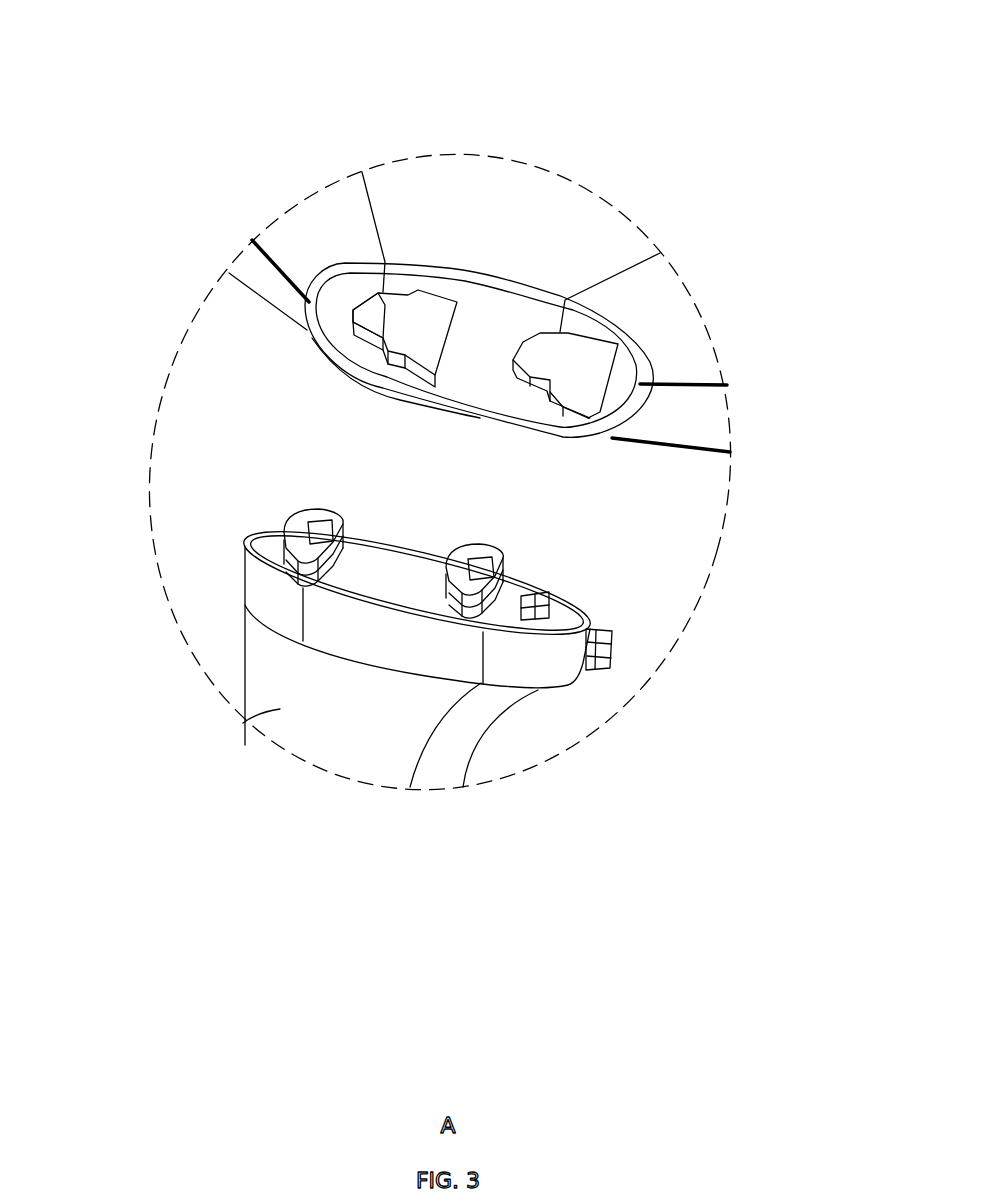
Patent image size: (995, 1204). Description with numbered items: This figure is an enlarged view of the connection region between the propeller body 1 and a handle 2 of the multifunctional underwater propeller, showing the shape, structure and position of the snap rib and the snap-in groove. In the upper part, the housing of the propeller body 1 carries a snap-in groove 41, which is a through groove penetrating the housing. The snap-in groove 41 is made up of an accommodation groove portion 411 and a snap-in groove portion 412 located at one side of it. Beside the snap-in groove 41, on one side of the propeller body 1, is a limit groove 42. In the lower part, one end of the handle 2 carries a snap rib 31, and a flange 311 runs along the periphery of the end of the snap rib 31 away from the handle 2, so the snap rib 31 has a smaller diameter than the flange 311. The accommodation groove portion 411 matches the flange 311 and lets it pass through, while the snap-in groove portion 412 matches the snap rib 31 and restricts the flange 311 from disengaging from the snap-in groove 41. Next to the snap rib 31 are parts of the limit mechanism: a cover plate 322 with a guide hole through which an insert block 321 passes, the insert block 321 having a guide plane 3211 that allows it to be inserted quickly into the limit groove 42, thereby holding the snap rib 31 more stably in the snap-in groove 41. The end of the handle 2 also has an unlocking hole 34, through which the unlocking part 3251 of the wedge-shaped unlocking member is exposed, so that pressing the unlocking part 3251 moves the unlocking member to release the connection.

The propeller body 1 is at (320, 262).
The handle 2 is at (245, 730).
The snap-in groove 41 is at (437, 202).
The accommodation groove portion 411 is at (437, 312).
The snap-in groove portion 412 is at (387, 303).
The limit groove 42 is at (603, 385).
The snap rib 31 is at (307, 563).
The flange 311 is at (285, 522).
The insert block 321 is at (585, 610).
The guide plane 3211 is at (549, 592).
The cover plate 322 is at (410, 582).
The unlocking hole 34 is at (576, 672).
The unlocking part 3251 is at (612, 662).